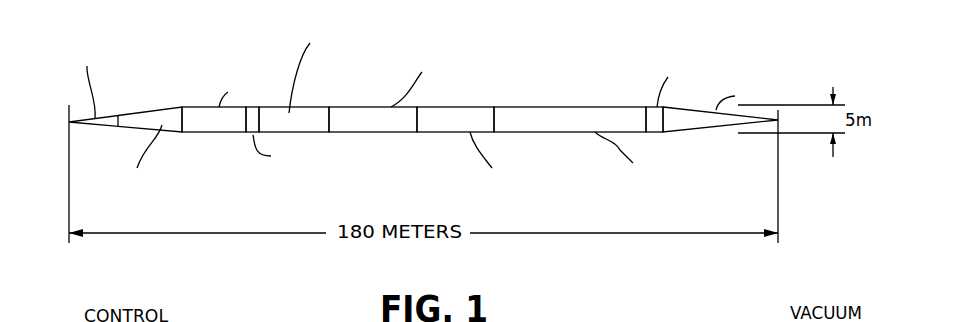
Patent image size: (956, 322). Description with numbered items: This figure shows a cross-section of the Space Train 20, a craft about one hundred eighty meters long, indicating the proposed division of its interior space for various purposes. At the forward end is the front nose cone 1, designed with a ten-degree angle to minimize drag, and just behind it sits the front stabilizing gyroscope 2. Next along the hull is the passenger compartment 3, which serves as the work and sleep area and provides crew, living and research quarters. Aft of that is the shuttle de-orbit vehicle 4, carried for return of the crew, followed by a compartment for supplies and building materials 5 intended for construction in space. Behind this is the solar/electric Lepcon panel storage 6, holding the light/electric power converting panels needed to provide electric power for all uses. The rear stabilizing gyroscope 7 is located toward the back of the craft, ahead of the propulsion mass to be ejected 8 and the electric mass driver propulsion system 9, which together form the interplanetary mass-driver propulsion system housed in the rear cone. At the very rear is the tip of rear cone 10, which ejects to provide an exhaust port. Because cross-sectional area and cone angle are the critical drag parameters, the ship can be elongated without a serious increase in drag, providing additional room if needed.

The front nose cone 1 is at (697, 115).
The front stabilizing gyroscope 2 is at (650, 107).
The passenger compartment 3 is at (548, 132).
The shuttle de-orbit vehicle 4 is at (448, 132).
The supplies and building materials 5 is at (363, 118).
The solar/electric Lepcon panel storage 6 is at (296, 113).
The rear stabilizing gyroscope 7 is at (247, 135).
The propulsion mass to be ejected 8 is at (212, 123).
The electric mass driver propulsion system 9 is at (150, 118).
The tip of rear cone 10 is at (107, 125).
The Space Train 20 is at (472, 107).